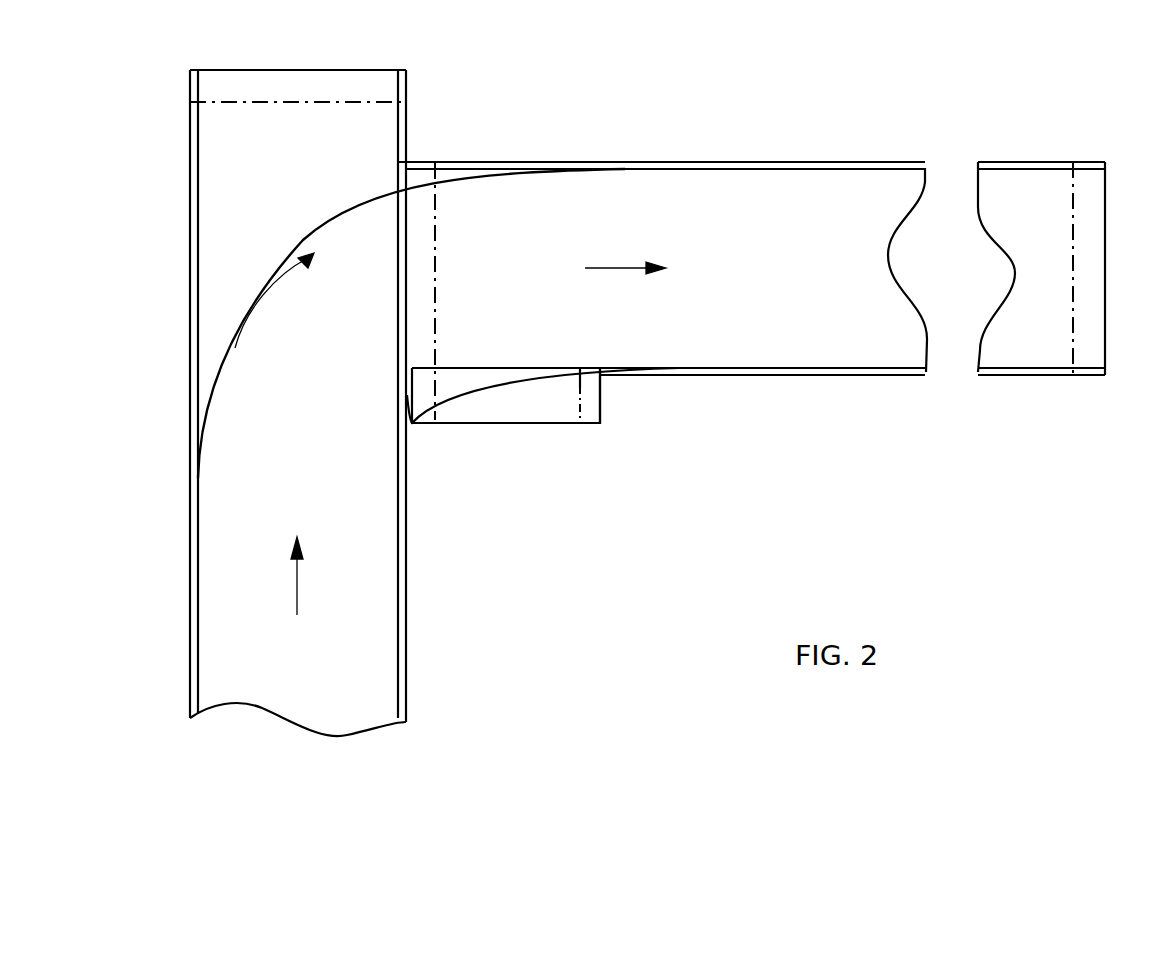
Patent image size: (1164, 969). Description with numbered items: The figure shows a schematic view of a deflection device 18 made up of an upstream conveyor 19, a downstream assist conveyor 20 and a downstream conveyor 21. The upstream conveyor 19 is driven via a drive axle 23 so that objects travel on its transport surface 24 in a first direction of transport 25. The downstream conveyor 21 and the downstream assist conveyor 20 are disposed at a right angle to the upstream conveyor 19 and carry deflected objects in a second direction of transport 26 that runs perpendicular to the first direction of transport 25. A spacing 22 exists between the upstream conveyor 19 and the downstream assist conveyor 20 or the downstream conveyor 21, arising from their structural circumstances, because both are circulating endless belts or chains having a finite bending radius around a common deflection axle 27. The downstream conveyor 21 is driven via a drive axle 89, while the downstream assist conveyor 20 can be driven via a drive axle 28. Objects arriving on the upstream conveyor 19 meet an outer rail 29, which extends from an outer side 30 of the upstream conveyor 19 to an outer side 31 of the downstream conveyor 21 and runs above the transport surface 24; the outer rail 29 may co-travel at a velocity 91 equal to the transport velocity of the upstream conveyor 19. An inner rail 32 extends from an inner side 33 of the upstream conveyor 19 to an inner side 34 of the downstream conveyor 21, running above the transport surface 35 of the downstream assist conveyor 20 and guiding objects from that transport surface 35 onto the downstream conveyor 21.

The deflection device 18 is at (917, 85).
The upstream conveyor 19 is at (292, 429).
The downstream assist conveyor 20 is at (602, 384).
The downstream conveyor 21 is at (751, 272).
The spacing 22 is at (412, 228).
The drive axle 23 is at (365, 102).
The transport surface 24 is at (218, 463).
The first direction of transport 25 is at (309, 576).
The second direction of transport 26 is at (625, 285).
The deflection axle 27 is at (440, 207).
The drive axle 28 is at (578, 410).
The outer rail 29 is at (235, 302).
The outer side 30 is at (190, 610).
The outer side 31 is at (790, 162).
The inner rail 32 is at (468, 393).
The inner side 33 is at (406, 620).
The inner side 34 is at (697, 375).
The transport surface 35 is at (525, 412).
The drive axle 89 is at (1077, 200).
The velocity 91 is at (270, 298).